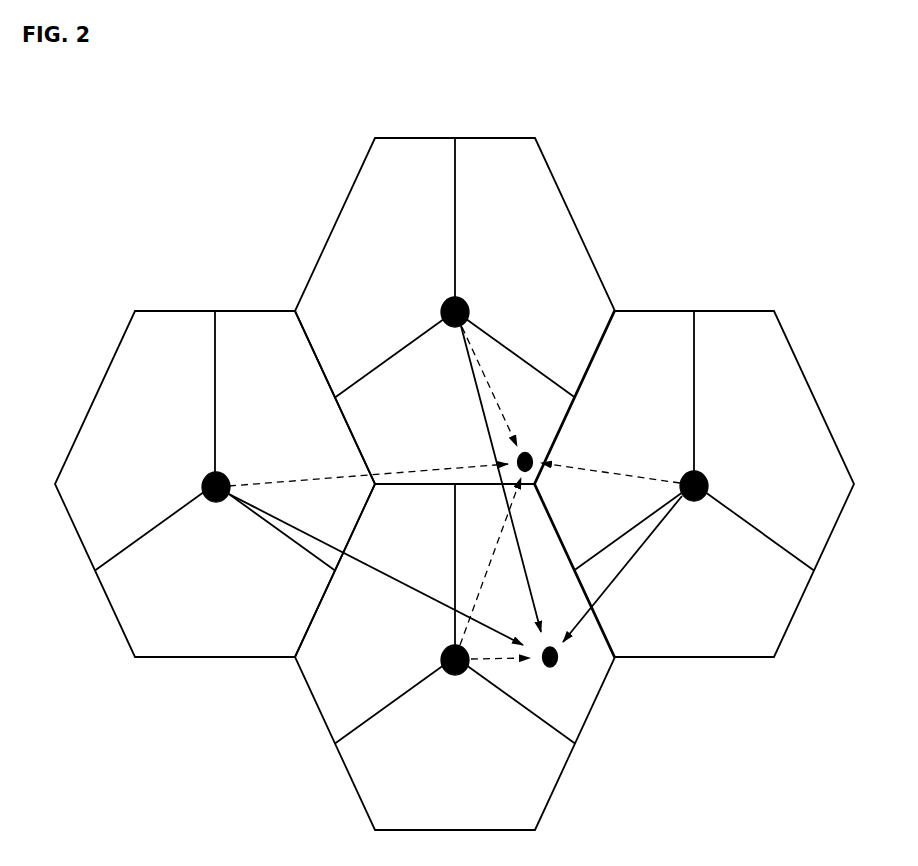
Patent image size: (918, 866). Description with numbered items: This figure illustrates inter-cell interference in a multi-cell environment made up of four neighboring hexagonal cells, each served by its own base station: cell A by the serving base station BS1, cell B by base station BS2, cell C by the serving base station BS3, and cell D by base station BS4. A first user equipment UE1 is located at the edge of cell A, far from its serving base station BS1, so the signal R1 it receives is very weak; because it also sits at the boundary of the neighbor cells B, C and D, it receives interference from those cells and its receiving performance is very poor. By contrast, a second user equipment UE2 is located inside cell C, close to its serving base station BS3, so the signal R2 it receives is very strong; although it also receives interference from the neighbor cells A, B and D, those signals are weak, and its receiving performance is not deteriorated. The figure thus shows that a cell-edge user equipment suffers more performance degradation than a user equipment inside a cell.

The serving base station BS1 is at (469, 457).
The base station BS2 is at (645, 546).
The serving base station BS3 is at (458, 576).
The base station BS4 is at (340, 551).
The first user equipment UE1 is at (530, 438).
The second user equipment UE2 is at (574, 665).
The signal received by first user equipment R1 is at (492, 386).
The signal received by second user equipment R2 is at (507, 683).